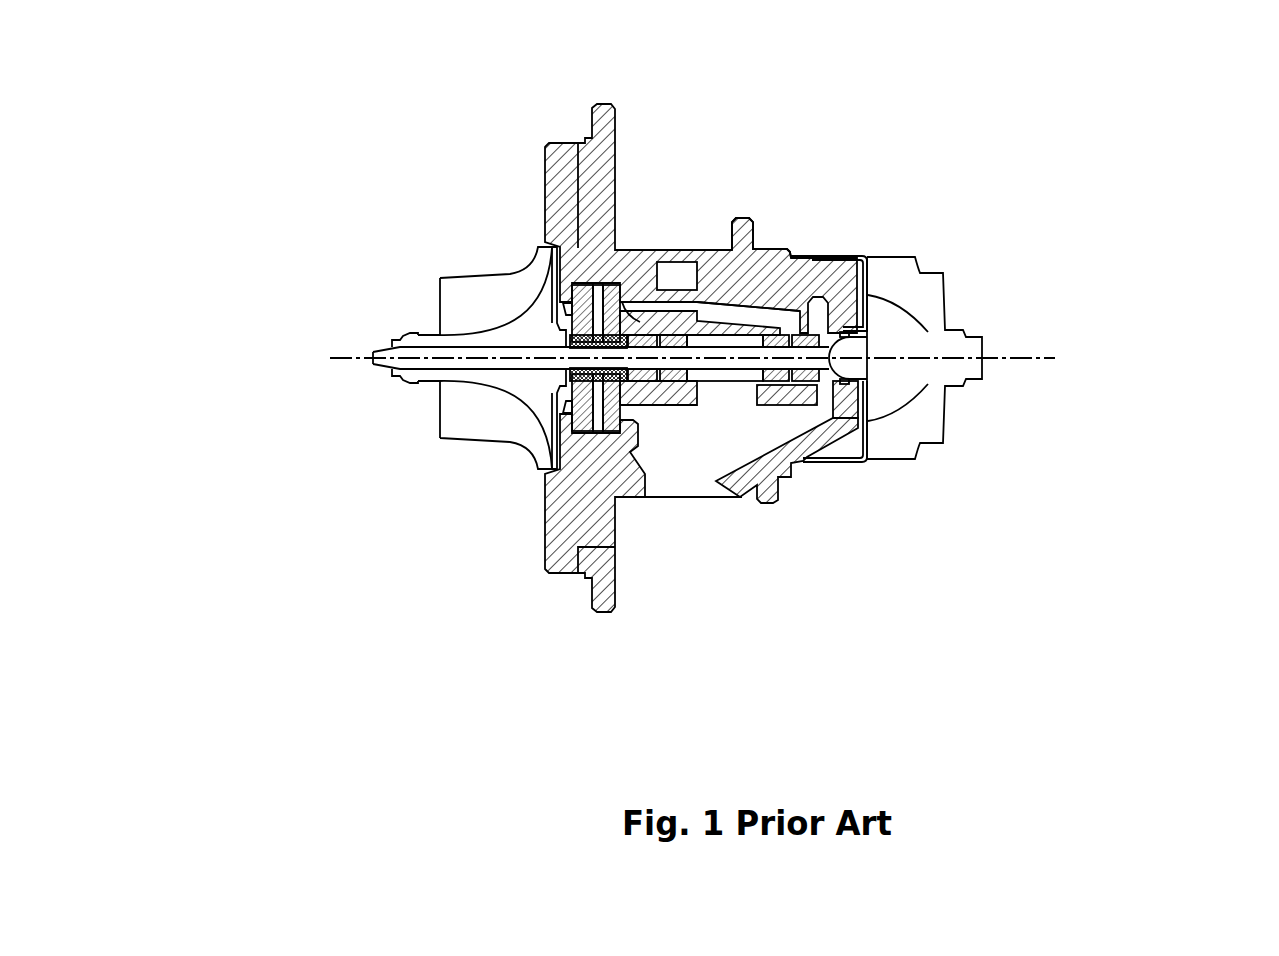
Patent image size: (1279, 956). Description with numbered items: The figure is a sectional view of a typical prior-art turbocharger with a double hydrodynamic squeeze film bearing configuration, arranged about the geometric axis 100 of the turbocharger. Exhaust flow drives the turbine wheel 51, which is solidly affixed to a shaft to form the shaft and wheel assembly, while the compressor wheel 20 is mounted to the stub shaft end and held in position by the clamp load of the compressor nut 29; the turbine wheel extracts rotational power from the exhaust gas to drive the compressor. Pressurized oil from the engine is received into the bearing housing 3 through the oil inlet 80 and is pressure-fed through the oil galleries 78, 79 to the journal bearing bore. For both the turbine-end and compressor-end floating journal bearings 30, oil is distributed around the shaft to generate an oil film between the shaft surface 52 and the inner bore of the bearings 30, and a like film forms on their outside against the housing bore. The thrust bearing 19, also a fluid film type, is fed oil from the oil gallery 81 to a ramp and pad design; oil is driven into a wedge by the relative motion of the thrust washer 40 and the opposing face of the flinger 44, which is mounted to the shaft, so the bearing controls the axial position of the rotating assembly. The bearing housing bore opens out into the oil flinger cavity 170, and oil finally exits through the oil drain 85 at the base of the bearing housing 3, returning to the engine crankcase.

The bearing housing 3 is at (742, 217).
The thrust bearing 19 is at (632, 397).
The compressor wheel 20 is at (497, 397).
The compressor nut 29 is at (413, 377).
The floating journal bearings 30 is at (622, 381).
The thrust washer 40 is at (620, 383).
The flinger 44 is at (563, 383).
The turbine wheel 51 is at (890, 330).
The shaft surface 52 is at (372, 354).
The oil gallery 78 is at (760, 317).
The oil gallery 79 is at (660, 305).
The oil inlet 80 is at (667, 272).
The oil gallery 81 is at (653, 297).
The oil drain 85 is at (683, 482).
The geometric axis 100 is at (1028, 363).
The oil flinger cavity 170 is at (855, 300).